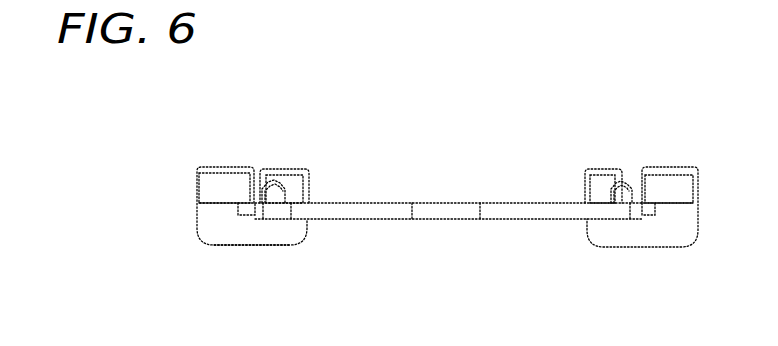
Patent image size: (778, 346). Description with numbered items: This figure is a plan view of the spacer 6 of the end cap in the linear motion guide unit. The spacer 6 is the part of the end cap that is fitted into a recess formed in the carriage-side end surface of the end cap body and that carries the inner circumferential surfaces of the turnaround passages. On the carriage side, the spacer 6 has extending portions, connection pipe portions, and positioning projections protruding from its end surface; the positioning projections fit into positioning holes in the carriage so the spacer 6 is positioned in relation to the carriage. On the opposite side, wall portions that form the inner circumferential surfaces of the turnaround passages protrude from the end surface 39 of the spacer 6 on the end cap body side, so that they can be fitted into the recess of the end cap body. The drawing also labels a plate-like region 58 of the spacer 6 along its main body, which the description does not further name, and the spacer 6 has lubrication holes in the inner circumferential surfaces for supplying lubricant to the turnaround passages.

The spacer 6 is at (500, 176).
The end surface 39 is at (360, 219).
The plate portion 58 is at (378, 203).